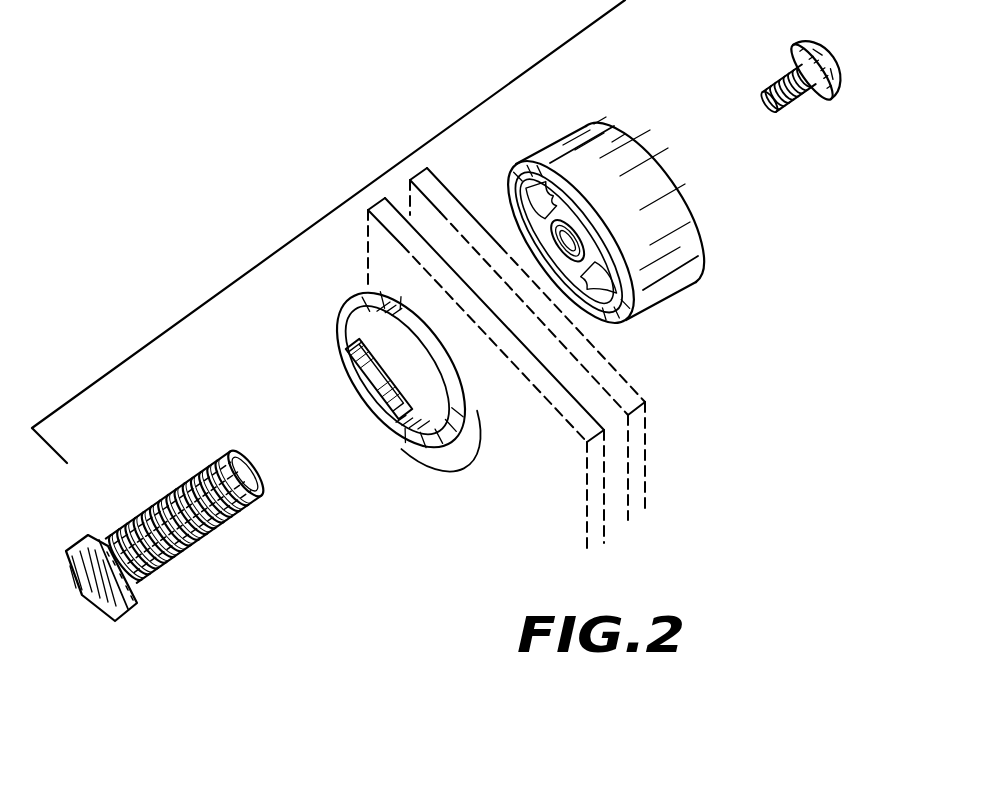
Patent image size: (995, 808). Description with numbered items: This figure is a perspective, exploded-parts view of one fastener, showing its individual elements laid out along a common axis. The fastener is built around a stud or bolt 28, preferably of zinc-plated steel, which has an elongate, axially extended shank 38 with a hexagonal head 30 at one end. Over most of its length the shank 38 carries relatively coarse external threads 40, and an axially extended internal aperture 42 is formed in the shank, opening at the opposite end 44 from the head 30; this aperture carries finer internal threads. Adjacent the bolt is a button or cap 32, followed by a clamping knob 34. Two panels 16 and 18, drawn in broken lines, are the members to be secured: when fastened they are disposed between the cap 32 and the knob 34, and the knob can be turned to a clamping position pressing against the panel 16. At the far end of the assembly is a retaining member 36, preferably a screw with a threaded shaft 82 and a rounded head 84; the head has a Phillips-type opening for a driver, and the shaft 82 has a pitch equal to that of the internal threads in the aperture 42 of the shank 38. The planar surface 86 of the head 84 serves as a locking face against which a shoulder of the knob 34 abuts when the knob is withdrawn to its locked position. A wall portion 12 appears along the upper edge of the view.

The wall member 12 is at (232, 0).
The panel 16 is at (627, 387).
The panel 18 is at (588, 477).
The bolt 28 is at (188, 458).
The hexagonal head 30 is at (118, 607).
The cap 32 is at (343, 310).
The clamping knob 34 is at (585, 128).
The retaining member 36 is at (785, 78).
The shank 38 is at (160, 580).
The external threads 40 is at (195, 546).
The internal aperture 42 is at (243, 520).
The opposite end 44 is at (243, 455).
The threaded shaft 82 is at (768, 78).
The rounded head 84 is at (830, 50).
The planar surface 86 is at (795, 50).